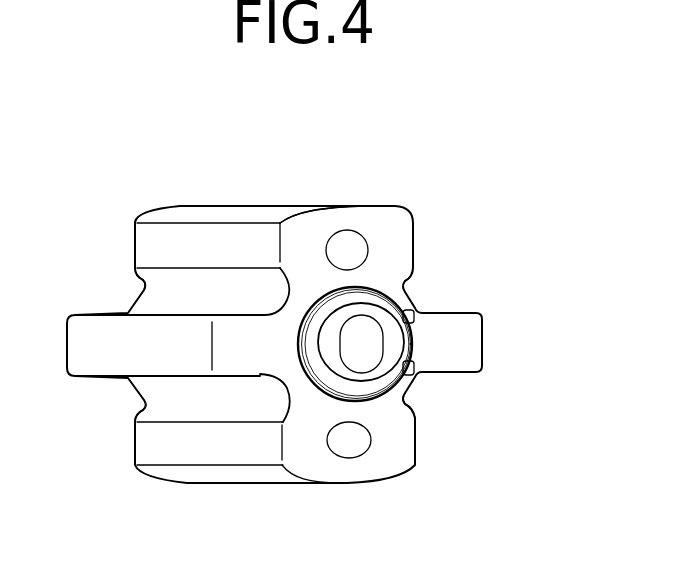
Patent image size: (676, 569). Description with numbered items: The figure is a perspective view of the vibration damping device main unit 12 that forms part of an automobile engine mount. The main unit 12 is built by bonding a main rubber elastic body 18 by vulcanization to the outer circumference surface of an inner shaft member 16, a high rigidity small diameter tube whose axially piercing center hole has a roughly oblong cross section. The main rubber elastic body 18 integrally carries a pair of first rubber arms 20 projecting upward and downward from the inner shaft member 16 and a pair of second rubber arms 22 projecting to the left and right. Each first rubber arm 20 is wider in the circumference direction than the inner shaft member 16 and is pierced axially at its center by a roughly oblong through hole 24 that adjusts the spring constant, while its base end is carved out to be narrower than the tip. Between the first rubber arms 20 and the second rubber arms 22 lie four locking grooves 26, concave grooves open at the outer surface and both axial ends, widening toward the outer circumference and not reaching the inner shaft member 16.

The vibration damping device main unit 12 is at (474, 283).
The inner shaft member 16 is at (330, 327).
The main rubber elastic body 18 is at (395, 393).
The first rubber arms 20 is at (383, 230).
The second rubber arms 22 is at (93, 347).
The through hole 24 is at (346, 252).
The locking grooves 26 is at (142, 280).